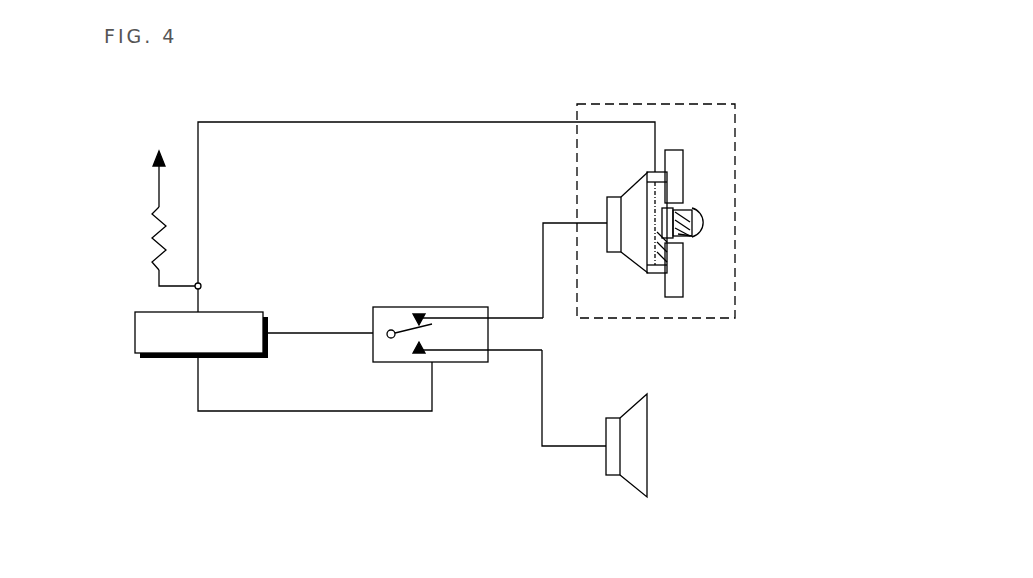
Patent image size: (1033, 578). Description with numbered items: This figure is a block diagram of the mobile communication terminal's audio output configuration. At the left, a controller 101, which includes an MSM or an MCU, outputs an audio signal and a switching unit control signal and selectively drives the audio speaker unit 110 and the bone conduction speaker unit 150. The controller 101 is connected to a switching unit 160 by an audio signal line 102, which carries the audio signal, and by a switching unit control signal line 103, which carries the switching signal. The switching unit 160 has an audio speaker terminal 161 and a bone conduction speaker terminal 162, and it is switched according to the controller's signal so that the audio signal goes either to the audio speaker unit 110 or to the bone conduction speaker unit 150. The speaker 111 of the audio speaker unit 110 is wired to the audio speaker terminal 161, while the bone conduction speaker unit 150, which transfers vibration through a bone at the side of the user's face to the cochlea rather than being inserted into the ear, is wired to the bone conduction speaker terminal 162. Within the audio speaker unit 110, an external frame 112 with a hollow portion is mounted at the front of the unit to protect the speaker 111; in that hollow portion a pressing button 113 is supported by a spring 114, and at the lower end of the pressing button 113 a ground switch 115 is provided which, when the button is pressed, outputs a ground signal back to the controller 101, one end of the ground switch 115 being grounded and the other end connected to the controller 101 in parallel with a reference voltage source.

The controller 101 is at (155, 360).
The audio signal line 102 is at (313, 333).
The switching unit control signal line 103 is at (307, 413).
The audio speaker unit 110 is at (735, 137).
The speaker 111 is at (640, 180).
The external frame 112 is at (683, 172).
The pressing button 113 is at (707, 222).
The spring 114 is at (690, 242).
The ground switch 115 is at (667, 270).
The bone conduction speaker unit 150 is at (649, 445).
The switching unit 160 is at (465, 363).
The audio speaker terminal 161 is at (428, 315).
The bone conduction speaker terminal 162 is at (415, 355).